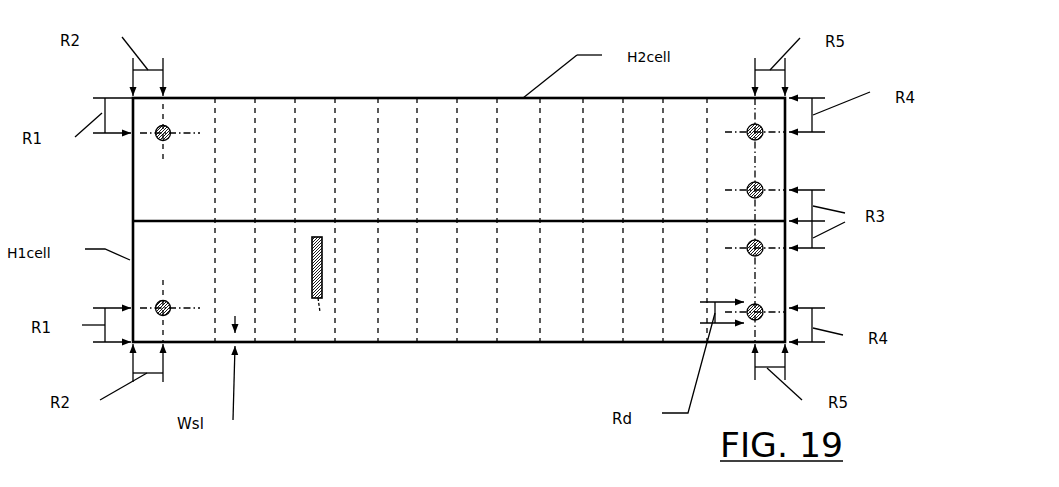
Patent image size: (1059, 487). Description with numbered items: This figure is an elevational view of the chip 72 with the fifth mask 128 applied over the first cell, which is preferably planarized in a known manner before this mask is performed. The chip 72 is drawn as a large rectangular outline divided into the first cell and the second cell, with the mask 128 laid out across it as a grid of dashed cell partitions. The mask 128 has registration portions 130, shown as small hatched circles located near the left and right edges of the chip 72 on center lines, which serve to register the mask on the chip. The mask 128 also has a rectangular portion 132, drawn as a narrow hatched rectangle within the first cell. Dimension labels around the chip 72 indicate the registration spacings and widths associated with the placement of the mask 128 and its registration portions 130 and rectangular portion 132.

The chip 72 is at (130, 96).
The mask 128 is at (193, 131).
The registration portions 130 is at (166, 126).
The rectangular portion 132 is at (325, 252).